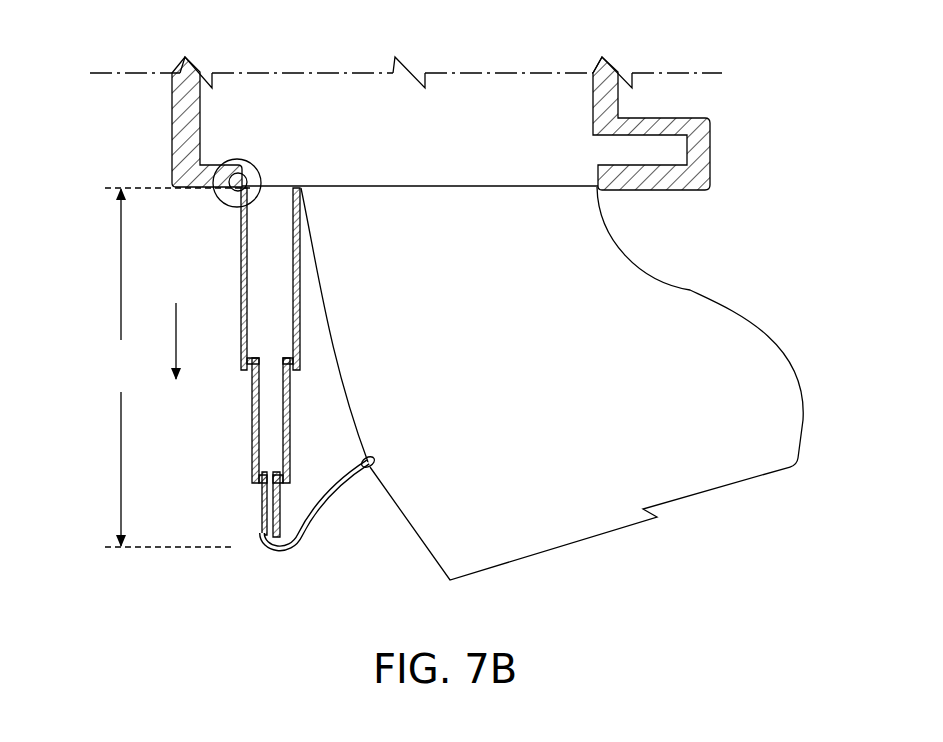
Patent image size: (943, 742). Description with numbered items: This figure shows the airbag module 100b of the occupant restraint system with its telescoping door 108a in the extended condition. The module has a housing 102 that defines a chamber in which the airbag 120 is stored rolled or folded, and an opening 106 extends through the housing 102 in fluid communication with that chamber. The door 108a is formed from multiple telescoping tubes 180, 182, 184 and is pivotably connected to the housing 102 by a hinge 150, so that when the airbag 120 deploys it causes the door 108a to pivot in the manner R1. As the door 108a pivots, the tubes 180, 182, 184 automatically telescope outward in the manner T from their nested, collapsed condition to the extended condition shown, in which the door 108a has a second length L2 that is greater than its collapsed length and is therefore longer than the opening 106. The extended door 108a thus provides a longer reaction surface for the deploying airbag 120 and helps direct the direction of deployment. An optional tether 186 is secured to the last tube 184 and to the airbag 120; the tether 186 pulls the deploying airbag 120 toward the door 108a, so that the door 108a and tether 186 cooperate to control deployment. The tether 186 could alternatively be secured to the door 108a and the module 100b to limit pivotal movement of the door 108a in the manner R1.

The housing 102 is at (176, 138).
The opening 106 is at (580, 160).
The hinge 150 is at (218, 200).
The pivoting manner R1 is at (258, 168).
The tube 180 is at (241, 282).
The telescoping door 108a is at (247, 379).
The tube 182 is at (252, 458).
The tube 184 is at (262, 513).
The tether 186 is at (318, 540).
The airbag 120 is at (640, 280).
The module 100b is at (750, 231).
The second length L2 is at (177, 367).
The telescoping manner T is at (172, 336).